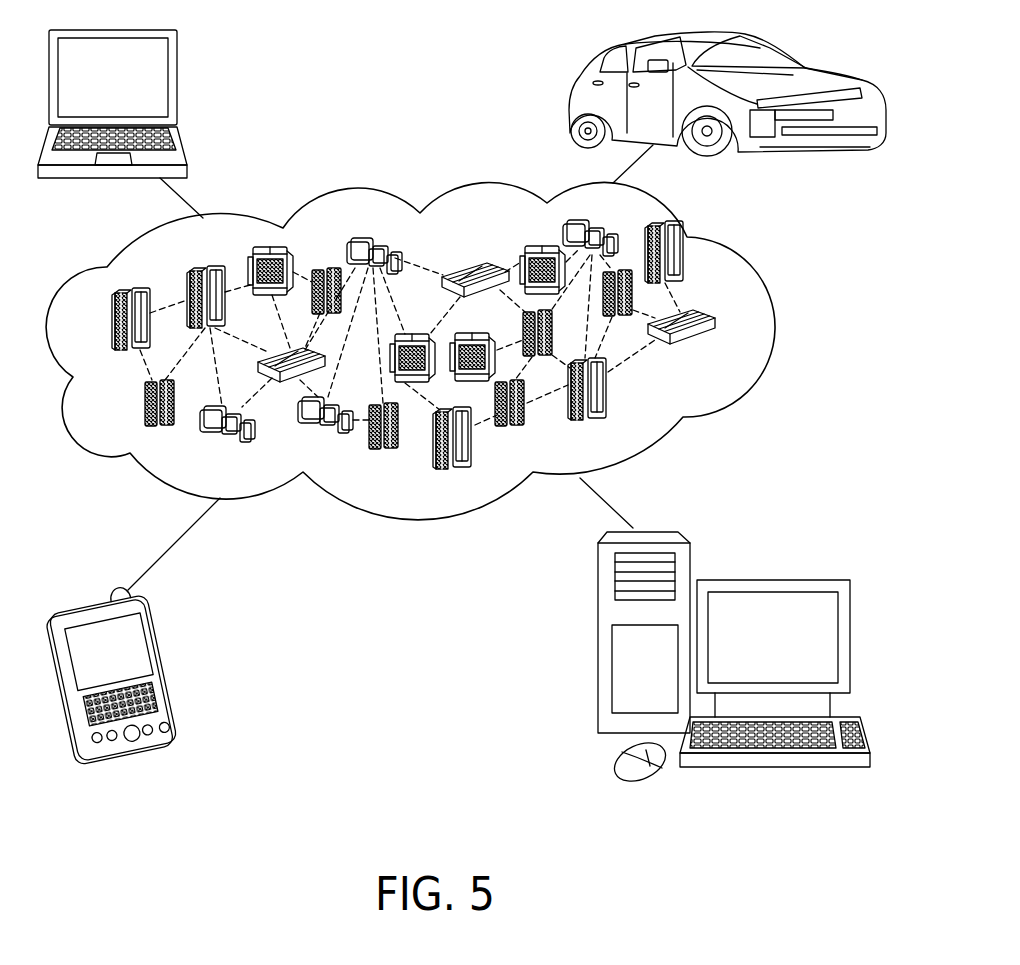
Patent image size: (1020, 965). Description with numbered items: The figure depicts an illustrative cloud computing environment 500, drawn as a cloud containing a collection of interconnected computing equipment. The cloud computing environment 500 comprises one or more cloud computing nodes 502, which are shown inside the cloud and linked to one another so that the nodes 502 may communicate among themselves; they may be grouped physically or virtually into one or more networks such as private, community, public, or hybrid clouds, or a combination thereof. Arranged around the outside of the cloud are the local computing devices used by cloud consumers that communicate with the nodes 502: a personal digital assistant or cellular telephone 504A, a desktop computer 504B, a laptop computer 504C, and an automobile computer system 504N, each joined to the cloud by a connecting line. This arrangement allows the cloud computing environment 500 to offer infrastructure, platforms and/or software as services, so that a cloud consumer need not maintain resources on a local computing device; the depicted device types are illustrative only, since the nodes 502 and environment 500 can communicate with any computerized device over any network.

The cloud computing environment 500 is at (726, 322).
The cloud computing nodes 502 is at (716, 349).
The personal digital assistant (PDA) or cellular telephone 504A is at (155, 646).
The desktop computer 504B is at (760, 580).
The laptop computer 504C is at (178, 62).
The automobile computer system 504N is at (575, 101).